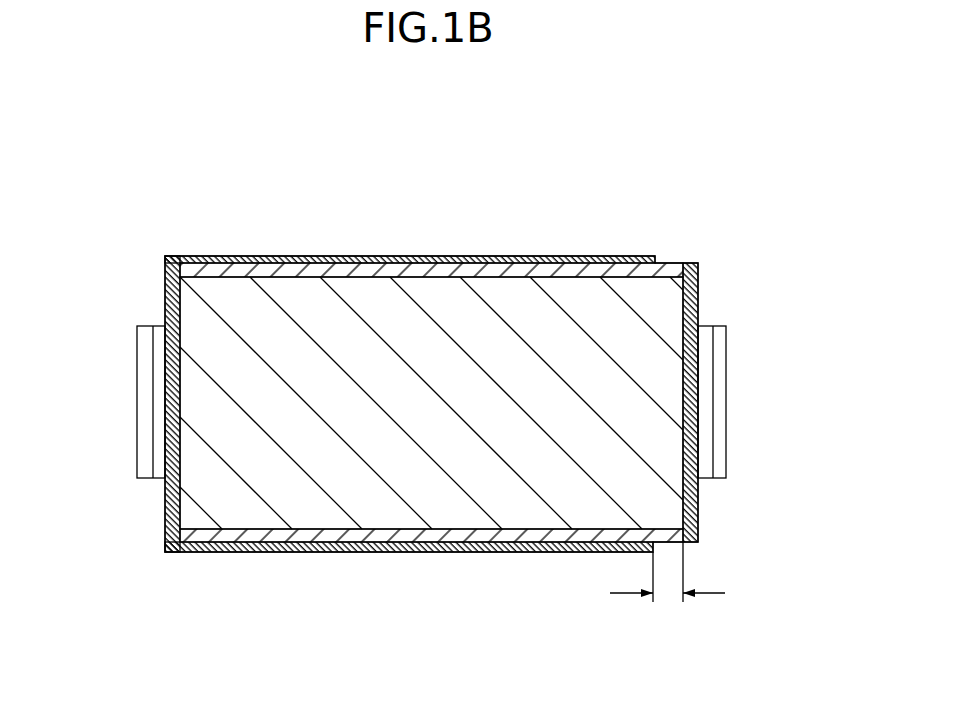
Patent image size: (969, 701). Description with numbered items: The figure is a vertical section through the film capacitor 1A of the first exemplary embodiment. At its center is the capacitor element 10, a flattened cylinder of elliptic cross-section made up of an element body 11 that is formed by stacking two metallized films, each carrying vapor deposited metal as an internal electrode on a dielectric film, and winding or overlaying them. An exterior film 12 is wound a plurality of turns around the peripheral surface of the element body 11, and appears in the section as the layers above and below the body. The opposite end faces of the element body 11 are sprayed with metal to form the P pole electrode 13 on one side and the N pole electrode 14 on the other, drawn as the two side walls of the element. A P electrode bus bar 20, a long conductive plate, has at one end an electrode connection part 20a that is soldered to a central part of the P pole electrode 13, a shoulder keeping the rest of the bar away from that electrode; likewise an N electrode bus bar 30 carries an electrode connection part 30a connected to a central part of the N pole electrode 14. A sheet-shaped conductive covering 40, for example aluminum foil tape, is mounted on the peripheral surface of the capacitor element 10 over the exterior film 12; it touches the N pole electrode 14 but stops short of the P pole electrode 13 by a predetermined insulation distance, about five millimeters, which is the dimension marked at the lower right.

The film capacitor 1A is at (642, 177).
The capacitor element 10 is at (668, 262).
The element body 11 is at (323, 322).
The exterior film 12 is at (538, 257).
The P pole electrode 13 is at (700, 295).
The N pole electrode 14 is at (165, 300).
The covering 40 is at (440, 257).
The P electrode bus bar 20 is at (726, 398).
The electrode connection part 20a is at (713, 445).
The N electrode bus bar 30 is at (137, 410).
The electrode connection part 30a is at (153, 450).